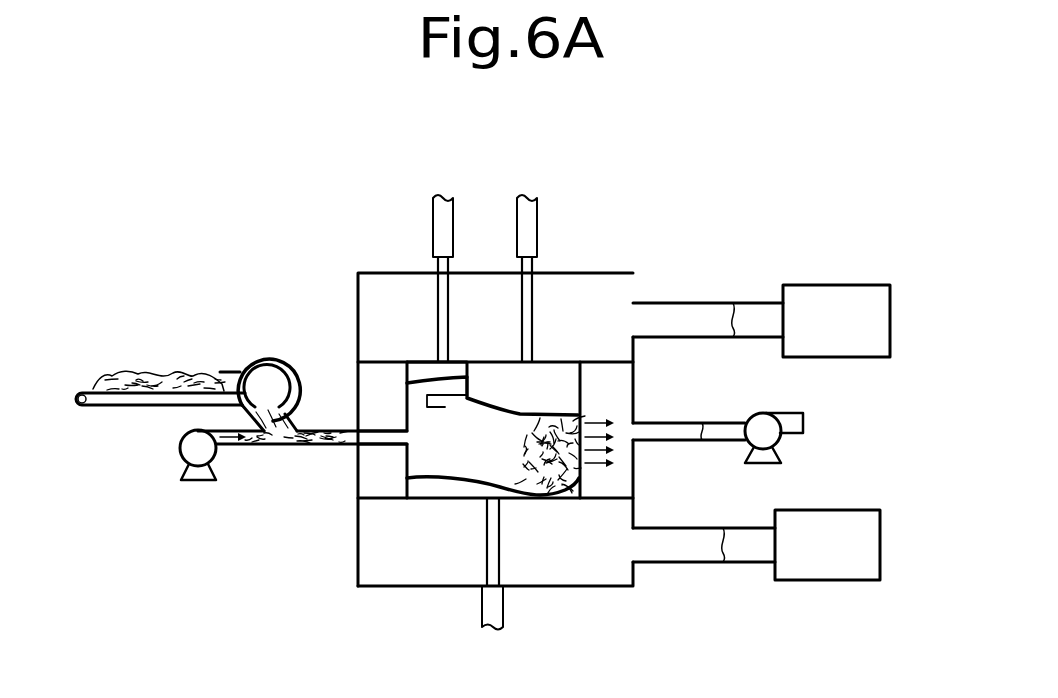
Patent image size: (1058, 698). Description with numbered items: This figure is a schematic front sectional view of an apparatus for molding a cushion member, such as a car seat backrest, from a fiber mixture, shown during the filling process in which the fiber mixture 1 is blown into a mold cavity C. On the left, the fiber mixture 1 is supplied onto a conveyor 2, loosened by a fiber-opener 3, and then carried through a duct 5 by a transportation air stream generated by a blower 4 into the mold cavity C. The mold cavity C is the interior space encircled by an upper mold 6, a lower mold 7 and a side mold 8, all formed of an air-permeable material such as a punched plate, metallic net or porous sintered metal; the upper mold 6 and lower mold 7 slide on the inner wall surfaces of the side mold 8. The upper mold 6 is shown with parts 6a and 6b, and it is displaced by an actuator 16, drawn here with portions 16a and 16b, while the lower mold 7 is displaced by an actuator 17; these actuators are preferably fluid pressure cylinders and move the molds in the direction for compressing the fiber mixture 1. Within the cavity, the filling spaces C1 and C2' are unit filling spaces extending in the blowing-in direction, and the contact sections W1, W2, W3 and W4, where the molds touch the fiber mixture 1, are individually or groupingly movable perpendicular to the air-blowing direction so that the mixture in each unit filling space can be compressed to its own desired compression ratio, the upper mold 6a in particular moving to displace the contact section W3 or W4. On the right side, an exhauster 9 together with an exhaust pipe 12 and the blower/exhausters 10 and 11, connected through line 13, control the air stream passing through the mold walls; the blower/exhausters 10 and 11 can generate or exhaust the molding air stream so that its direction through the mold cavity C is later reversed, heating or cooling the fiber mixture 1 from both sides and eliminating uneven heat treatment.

The fiber mixture 1 is at (140, 378).
The conveyor 2 is at (138, 405).
The fiber-opener 3 is at (253, 373).
The blower 4 is at (196, 452).
The duct 5 is at (305, 447).
The upper mold 6 is at (455, 269).
The upper mold 6a is at (493, 380).
The upper electrode part 6b is at (419, 371).
The lower mold 7 is at (430, 491).
The side mold 8 is at (403, 407).
The exhauster 9 is at (781, 434).
The blower/exhauster 10 is at (818, 562).
The blower/exhauster 11 is at (816, 307).
The exhaust pipe 12 is at (703, 303).
The lead line 13 is at (706, 563).
The actuator 16 is at (511, 232).
The electrode rod 16a is at (553, 256).
The electrode rod 16b is at (443, 210).
The actuator 17 is at (487, 612).
The contact section W1 is at (432, 367).
The contact section W2 is at (443, 399).
The contact section W3 is at (523, 409).
The contact section W4 is at (470, 491).
The mold cavity C is at (562, 547).
The unit filling space C1 is at (477, 405).
The unit filling space C2' is at (572, 530).